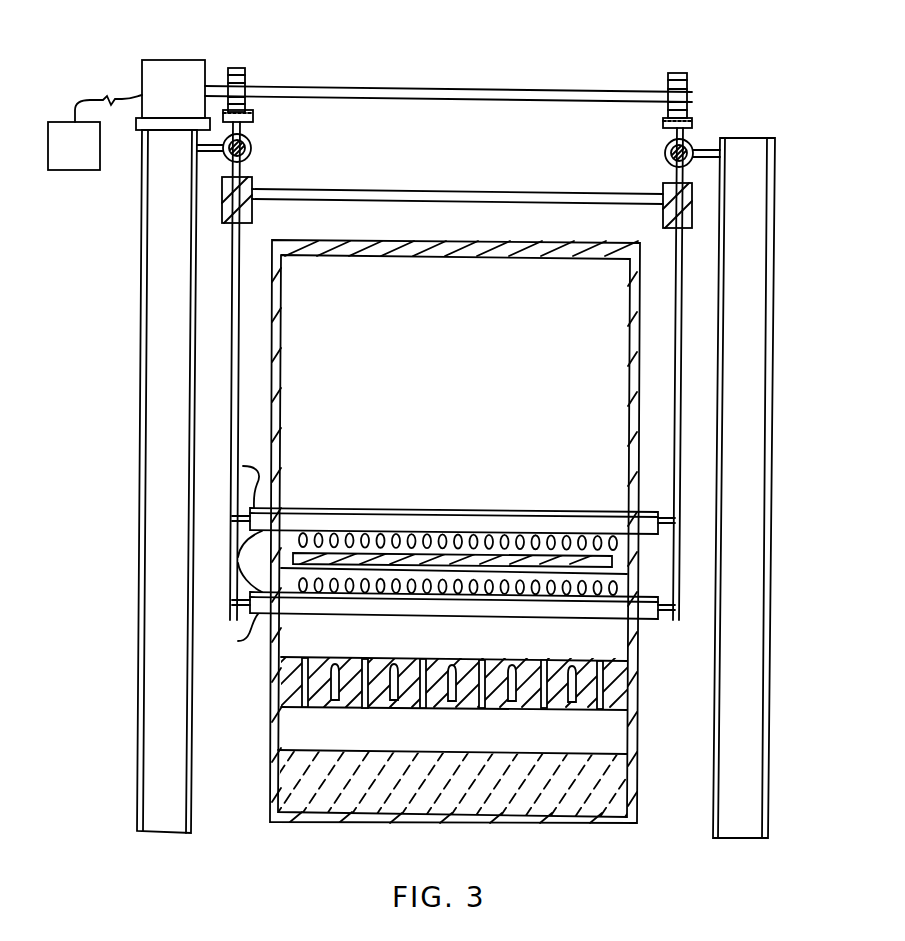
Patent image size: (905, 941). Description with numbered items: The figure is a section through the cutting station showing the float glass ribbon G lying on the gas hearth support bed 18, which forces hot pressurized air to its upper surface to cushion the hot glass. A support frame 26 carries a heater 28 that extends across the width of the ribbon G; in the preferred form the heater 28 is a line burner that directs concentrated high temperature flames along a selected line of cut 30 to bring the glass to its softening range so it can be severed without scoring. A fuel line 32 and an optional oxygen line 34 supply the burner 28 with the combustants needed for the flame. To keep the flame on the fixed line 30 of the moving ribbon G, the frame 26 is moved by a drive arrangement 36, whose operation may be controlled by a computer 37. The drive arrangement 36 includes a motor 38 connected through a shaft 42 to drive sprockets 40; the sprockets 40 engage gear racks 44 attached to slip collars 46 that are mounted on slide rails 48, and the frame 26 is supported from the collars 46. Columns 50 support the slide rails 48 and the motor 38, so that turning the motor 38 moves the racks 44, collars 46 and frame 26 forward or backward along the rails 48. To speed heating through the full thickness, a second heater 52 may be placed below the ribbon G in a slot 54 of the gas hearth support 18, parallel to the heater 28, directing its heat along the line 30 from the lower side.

The gas hearth support bed 18 is at (510, 708).
The support frame 26 is at (243, 238).
The heater 28 is at (418, 508).
The line of cut 30 is at (573, 558).
The fuel line 32 is at (243, 466).
The oxygen line 34 is at (238, 559).
The drive arrangement 36 is at (230, 52).
The computer 37 is at (95, 132).
The motor 38 is at (142, 75).
The drive sprockets 40 is at (246, 70).
The shaft 42 is at (540, 91).
The gear racks 44 is at (253, 117).
The slip collars 46 is at (251, 142).
The slide rails 48 is at (251, 155).
The columns 50 is at (137, 735).
The second heater 52 is at (485, 619).
The slot 54 is at (383, 658).
The float glass ribbon G is at (612, 561).